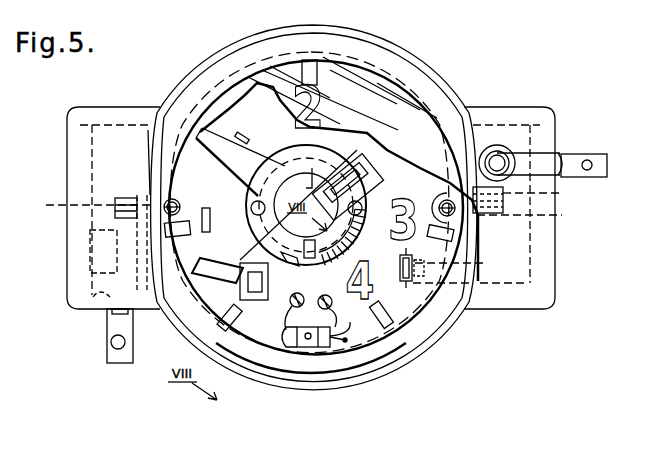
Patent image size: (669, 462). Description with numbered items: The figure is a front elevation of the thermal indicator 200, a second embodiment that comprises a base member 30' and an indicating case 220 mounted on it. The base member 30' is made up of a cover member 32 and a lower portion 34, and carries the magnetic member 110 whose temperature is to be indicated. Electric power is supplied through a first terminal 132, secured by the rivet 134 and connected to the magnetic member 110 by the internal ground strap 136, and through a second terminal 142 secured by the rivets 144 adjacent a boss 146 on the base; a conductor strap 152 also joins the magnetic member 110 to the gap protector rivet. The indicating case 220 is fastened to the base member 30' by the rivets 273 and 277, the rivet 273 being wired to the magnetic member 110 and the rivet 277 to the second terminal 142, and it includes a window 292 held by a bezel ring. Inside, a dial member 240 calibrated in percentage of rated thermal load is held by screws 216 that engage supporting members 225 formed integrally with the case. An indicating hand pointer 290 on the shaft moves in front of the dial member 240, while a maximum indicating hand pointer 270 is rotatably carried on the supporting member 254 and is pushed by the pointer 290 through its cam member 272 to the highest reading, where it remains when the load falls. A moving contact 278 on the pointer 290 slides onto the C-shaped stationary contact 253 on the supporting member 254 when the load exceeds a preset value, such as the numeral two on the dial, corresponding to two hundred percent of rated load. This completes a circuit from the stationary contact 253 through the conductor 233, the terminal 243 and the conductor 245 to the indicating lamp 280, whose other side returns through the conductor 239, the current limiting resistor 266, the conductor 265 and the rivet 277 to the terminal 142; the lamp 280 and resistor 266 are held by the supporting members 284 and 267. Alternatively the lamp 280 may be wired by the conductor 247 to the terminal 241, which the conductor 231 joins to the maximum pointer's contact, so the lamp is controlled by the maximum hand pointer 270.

The dial member 240 is at (202, 115).
The window 292 is at (388, 103).
The bearing boss 146 is at (494, 146).
The cover member 32 is at (534, 112).
The rivets 144 is at (570, 160).
The second terminal 142 is at (608, 164).
The maximum indicating hand pointer 270 is at (216, 132).
The cam member 272 is at (253, 137).
The supporting member 254 is at (347, 201).
The stationary contact 253 is at (278, 176).
The moving contact 278 is at (380, 183).
The rivet 277 is at (384, 197).
The rivet 273 is at (251, 209).
The supporting members 225 is at (150, 196).
The screws 216 is at (175, 199).
The magnetic member 110 is at (304, 210).
The conductor strap 152 is at (532, 198).
The internal ground strap 136 is at (115, 246).
The rivet 134 is at (96, 306).
The first terminal 132 is at (106, 352).
The conductor 233 is at (311, 252).
The conductor 265 is at (401, 258).
The supporting member 267 is at (482, 263).
The current limiting resistor 266 is at (470, 290).
The lower portion 34 is at (548, 290).
The indicating hand pointer 290 is at (214, 272).
The conductor 231 is at (286, 299).
The terminal 241 is at (295, 314).
The terminal 243 is at (283, 339).
The indicating lamp 280 is at (290, 347).
The supporting member 284 is at (310, 347).
The conductor 247 is at (350, 322).
The conductor 245 is at (365, 322).
The conductor 239 is at (403, 347).
The indicating case 220 is at (449, 330).
The base member 30' is at (525, 326).
The thermal indicator 200 is at (495, 380).